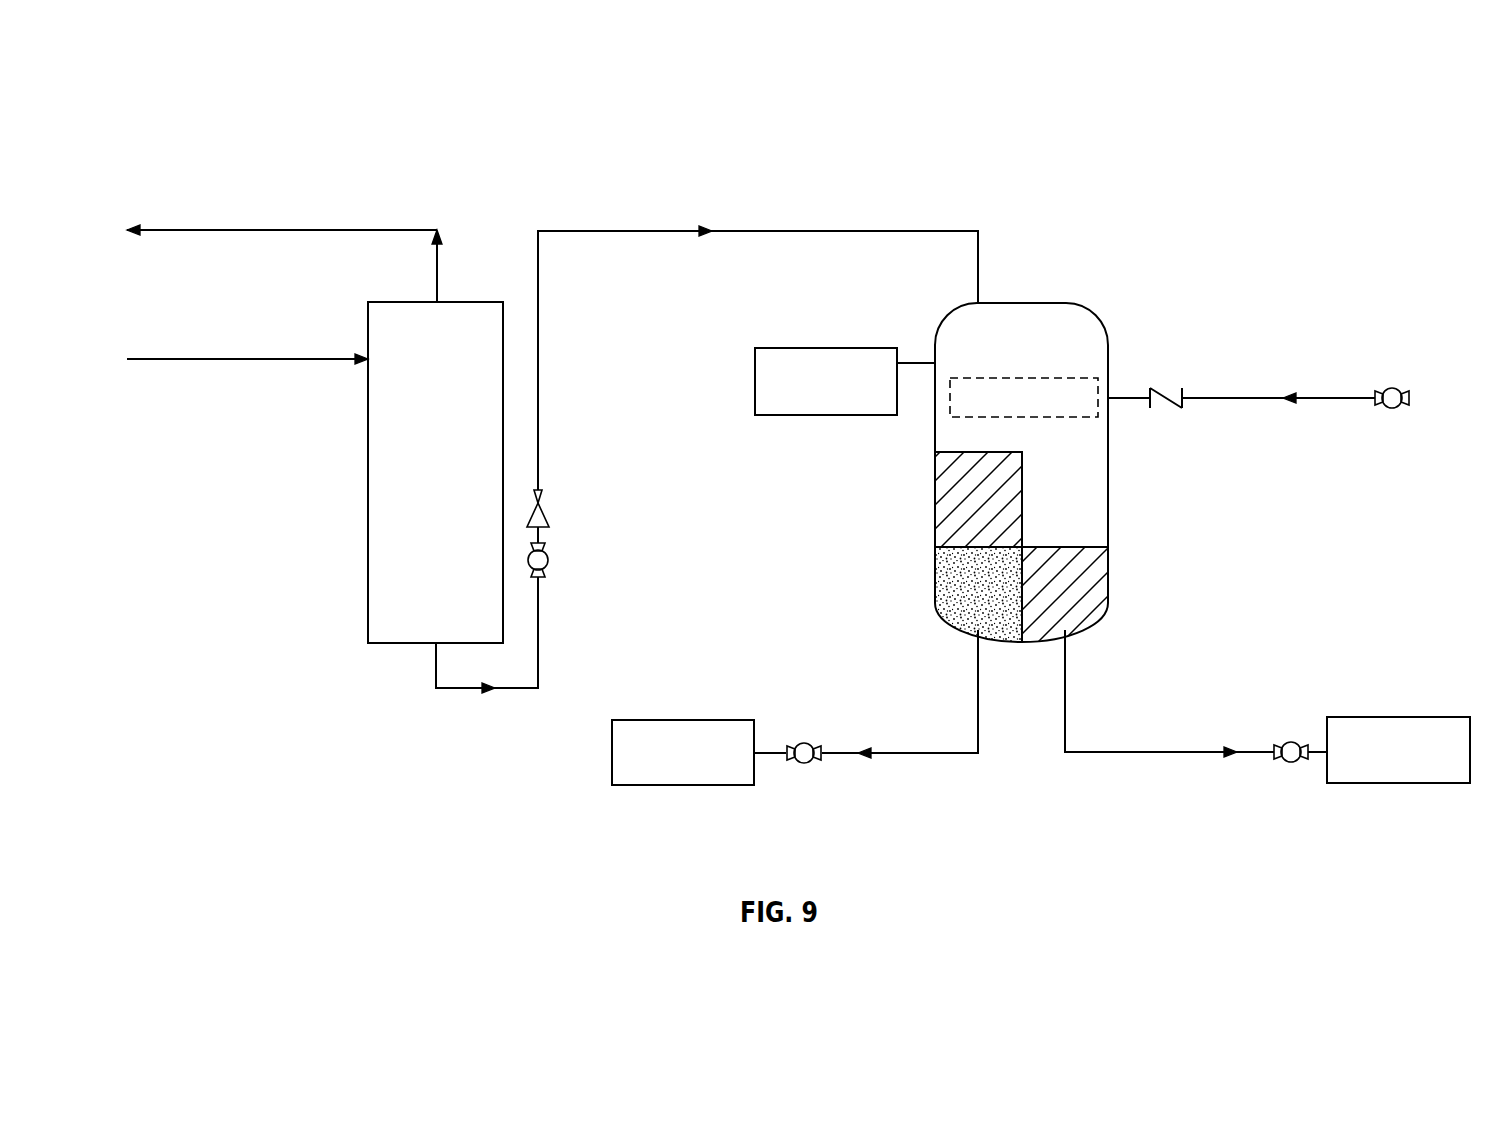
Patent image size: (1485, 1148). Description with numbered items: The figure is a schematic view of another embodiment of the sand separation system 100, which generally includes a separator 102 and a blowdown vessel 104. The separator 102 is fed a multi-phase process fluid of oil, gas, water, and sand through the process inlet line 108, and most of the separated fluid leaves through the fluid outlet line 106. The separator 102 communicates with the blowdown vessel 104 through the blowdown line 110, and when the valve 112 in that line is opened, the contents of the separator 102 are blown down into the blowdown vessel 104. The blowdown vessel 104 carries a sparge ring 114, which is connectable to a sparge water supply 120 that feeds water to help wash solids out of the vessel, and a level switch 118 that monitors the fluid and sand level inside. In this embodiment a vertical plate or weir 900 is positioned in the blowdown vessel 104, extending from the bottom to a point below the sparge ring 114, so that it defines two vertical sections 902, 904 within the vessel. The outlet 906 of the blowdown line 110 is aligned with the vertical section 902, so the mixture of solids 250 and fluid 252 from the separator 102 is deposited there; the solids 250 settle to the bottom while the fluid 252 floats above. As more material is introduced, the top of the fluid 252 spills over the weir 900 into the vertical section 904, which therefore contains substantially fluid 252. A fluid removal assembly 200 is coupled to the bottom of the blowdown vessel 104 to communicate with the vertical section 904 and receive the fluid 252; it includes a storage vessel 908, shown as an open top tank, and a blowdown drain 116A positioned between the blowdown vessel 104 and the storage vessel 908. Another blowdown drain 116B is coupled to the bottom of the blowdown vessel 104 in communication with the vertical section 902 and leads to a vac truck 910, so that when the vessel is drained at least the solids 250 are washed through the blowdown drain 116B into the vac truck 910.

The sand separation system 100 is at (180, 110).
The separator 102 is at (457, 300).
The blowdown vessel 104 is at (1065, 305).
The fluid outlet line 106 is at (353, 229).
The process inlet line 108 is at (205, 362).
The blowdown line 110 is at (627, 230).
The valve 112 is at (549, 558).
The sparge ring 114 is at (1080, 378).
The blowdown drain 116A is at (1110, 754).
The blowdown drain 116B is at (930, 756).
The level switch 118 is at (826, 348).
The sparge water supply 120 is at (1390, 410).
The fluid removal assembly 200 is at (1307, 802).
The solids 250 is at (955, 610).
The fluid 252 is at (940, 517).
The weir 900 is at (1022, 498).
The vertical section 902 is at (947, 462).
The vertical section 904 is at (1090, 458).
The outlet 906 is at (973, 302).
The storage vessel 908 is at (1412, 717).
The vac truck 910 is at (680, 720).